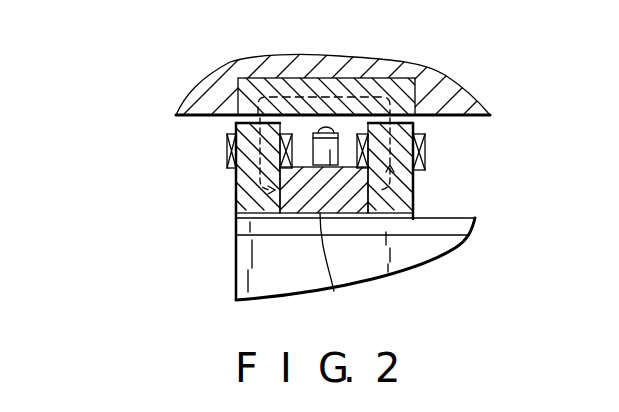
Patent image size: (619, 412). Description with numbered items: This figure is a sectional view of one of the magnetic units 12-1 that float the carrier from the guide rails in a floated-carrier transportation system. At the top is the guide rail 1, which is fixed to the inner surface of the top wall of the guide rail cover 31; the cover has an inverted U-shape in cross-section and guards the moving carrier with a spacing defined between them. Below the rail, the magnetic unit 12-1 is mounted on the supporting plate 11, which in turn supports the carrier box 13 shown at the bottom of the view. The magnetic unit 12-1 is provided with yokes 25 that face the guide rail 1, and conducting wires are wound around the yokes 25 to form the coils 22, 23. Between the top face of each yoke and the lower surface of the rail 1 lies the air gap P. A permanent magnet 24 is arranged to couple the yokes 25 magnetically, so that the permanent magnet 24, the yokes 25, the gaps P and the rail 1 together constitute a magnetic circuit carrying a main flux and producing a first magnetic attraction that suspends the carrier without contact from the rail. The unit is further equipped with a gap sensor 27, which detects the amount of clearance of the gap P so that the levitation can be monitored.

The guide rail cover 31 is at (228, 70).
The guide rail 1 is at (402, 83).
The air gap P is at (413, 122).
The magnetic unit 12-1 is at (264, 163).
The yokes 25 is at (408, 188).
The coil 22 is at (227, 148).
The coil 23 is at (427, 155).
The gap sensor 27 is at (328, 127).
The supporting plate 11 is at (460, 224).
The carrier box 13 is at (241, 268).
The permanent magnet 24 is at (333, 268).